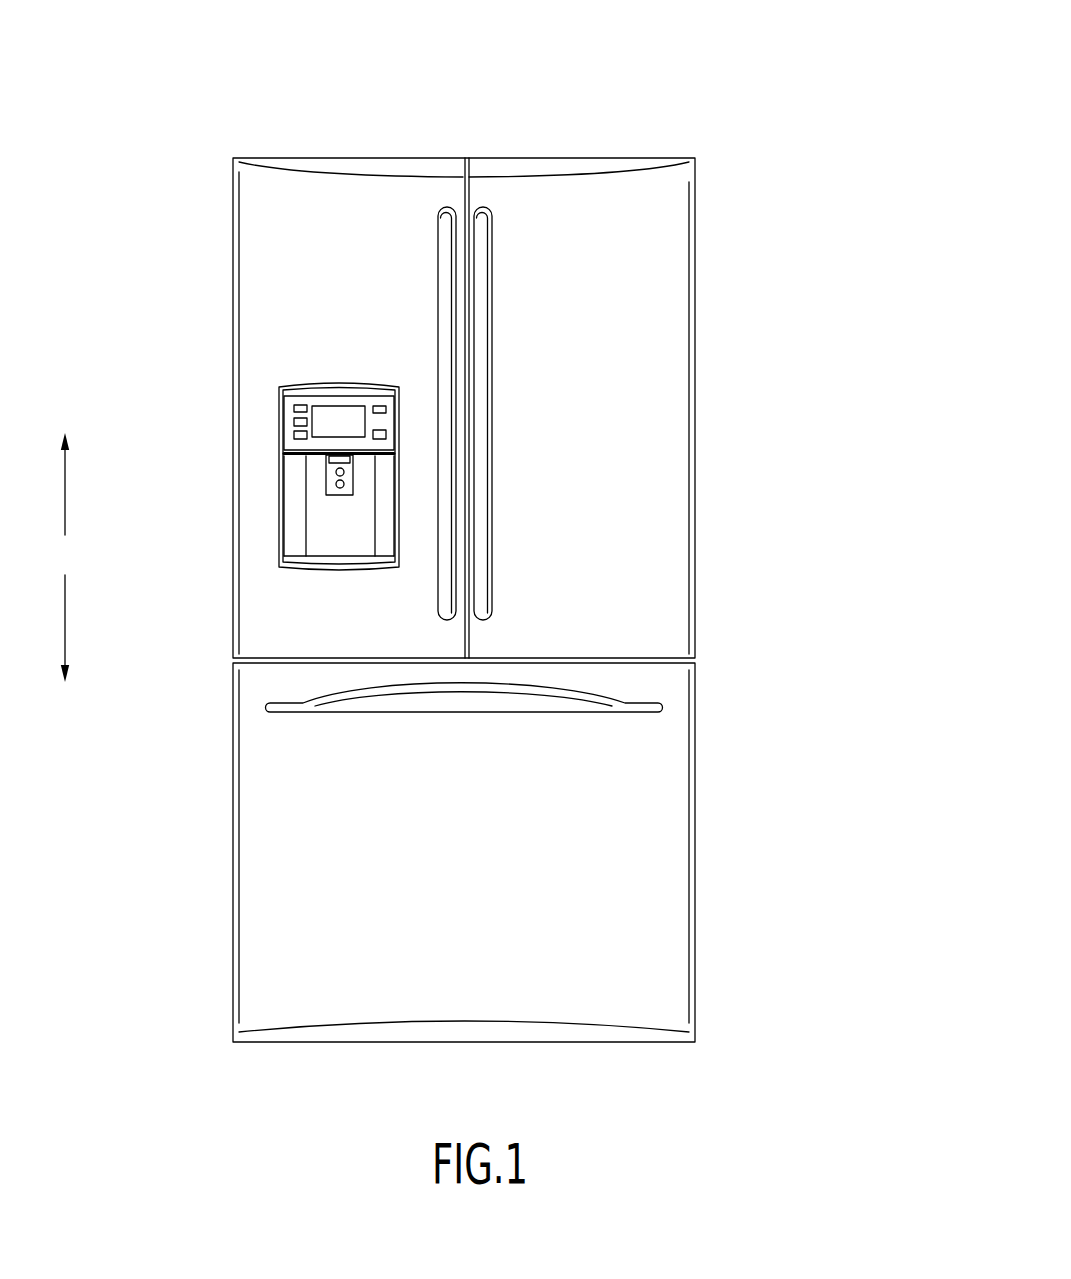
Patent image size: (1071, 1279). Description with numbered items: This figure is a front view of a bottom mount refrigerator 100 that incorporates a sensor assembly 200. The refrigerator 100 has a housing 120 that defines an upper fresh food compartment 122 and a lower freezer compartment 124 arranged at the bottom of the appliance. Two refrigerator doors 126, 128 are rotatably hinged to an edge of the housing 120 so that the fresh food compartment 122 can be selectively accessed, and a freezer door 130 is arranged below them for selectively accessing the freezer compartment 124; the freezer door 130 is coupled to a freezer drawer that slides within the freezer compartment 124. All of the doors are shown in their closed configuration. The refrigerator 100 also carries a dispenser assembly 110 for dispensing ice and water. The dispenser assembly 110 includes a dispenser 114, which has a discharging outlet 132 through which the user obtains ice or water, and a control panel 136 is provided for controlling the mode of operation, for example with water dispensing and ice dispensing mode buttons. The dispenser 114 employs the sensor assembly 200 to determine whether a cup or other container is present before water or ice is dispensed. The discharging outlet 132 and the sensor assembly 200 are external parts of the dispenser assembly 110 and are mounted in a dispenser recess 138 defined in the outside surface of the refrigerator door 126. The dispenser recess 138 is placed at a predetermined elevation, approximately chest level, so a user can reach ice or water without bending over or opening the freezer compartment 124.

The refrigerator 100 is at (742, 86).
The dispenser assembly 110 is at (274, 370).
The dispenser 114 is at (337, 540).
The housing 120 is at (233, 848).
The fresh food compartment 122 is at (656, 432).
The freezer compartment 124 is at (666, 813).
The refrigerator door 126 is at (257, 281).
The refrigerator door 128 is at (658, 270).
The freezer door 130 is at (653, 922).
The discharging outlet 132 is at (345, 461).
The control panel 136 is at (285, 429).
The dispenser recess 138 is at (363, 540).
The sensor assembly 200 is at (319, 479).